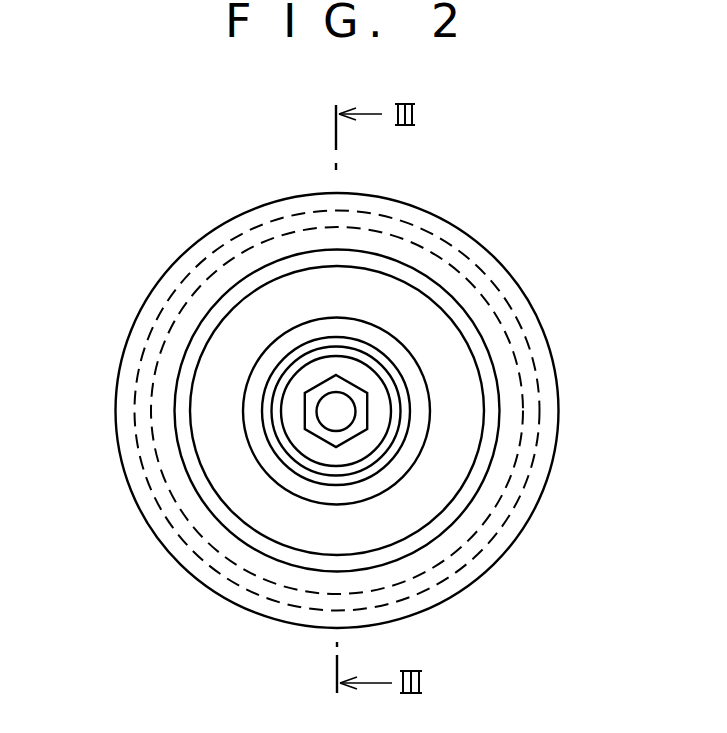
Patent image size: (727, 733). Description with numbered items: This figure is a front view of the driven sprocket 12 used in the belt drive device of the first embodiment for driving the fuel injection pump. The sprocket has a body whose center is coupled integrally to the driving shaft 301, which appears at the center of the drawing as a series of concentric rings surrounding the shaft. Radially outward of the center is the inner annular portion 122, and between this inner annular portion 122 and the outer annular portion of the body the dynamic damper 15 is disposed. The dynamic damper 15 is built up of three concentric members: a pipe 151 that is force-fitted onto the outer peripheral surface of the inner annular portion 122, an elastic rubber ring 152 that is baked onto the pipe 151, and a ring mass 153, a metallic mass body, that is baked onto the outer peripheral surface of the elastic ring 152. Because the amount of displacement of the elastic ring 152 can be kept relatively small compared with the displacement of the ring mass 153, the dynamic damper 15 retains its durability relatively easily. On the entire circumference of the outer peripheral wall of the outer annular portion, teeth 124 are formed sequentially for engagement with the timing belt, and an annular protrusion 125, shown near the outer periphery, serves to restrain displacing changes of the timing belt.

The driven sprocket 12 is at (155, 225).
The dynamic damper 15 is at (202, 348).
The inner annular portion 122 is at (393, 435).
The teeth 124 is at (490, 297).
The annular protrusion 125 is at (500, 543).
The pipe 151 is at (263, 408).
The elastic rubber ring 152 is at (258, 447).
The ring mass 153 is at (452, 368).
The driving shaft 301 is at (343, 415).